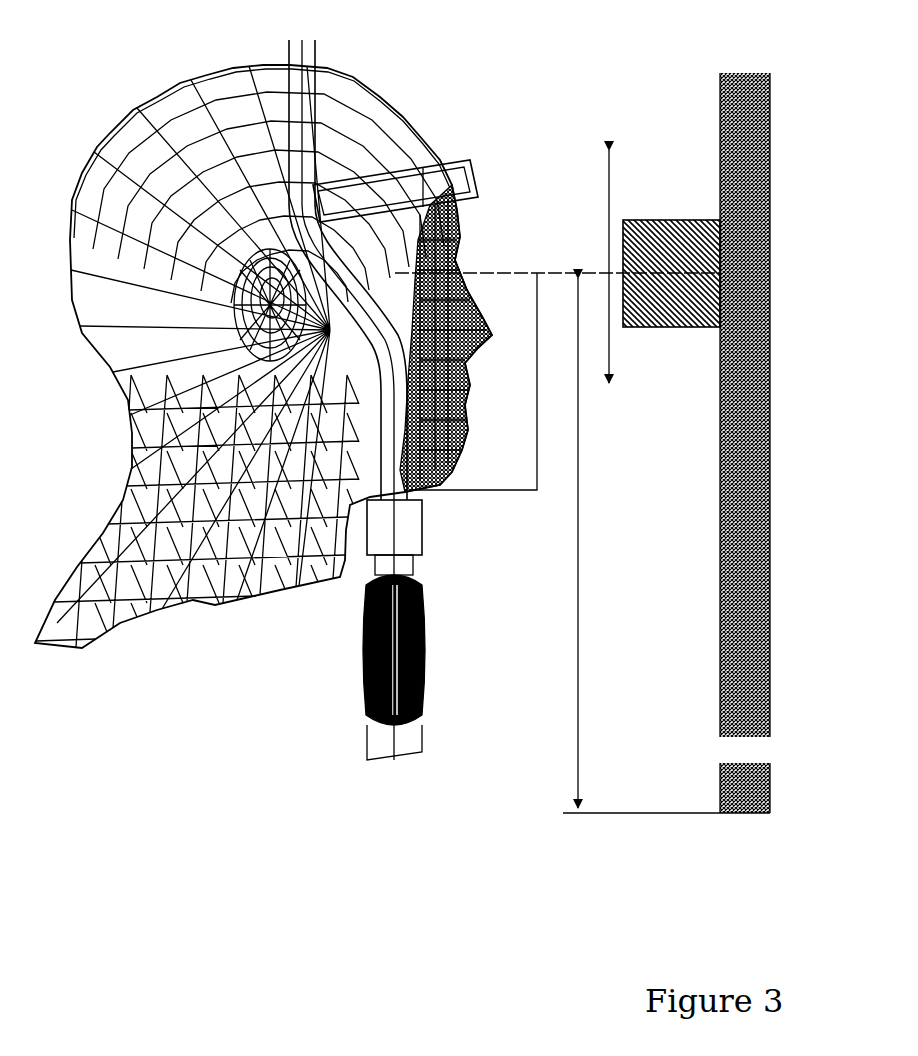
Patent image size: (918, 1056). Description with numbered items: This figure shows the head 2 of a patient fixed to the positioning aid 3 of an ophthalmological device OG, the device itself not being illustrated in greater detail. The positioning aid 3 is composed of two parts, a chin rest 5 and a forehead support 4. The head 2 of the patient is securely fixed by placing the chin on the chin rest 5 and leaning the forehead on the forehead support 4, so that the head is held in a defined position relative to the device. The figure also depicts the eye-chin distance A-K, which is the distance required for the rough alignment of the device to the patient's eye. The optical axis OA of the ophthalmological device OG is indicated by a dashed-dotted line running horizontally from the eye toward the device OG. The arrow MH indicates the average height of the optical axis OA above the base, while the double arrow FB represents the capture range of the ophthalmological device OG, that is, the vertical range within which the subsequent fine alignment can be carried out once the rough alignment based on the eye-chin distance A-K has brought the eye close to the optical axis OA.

The head 2 is at (167, 157).
The positioning aid 3 is at (295, 117).
The forehead support 4 is at (447, 182).
The chin rest 5 is at (422, 503).
The optical axis OA is at (515, 273).
The capture range FB is at (612, 240).
The ophthalmological device OG is at (730, 170).
The eye-chin distance A-K is at (533, 437).
The average height of the optical axis MH is at (577, 640).